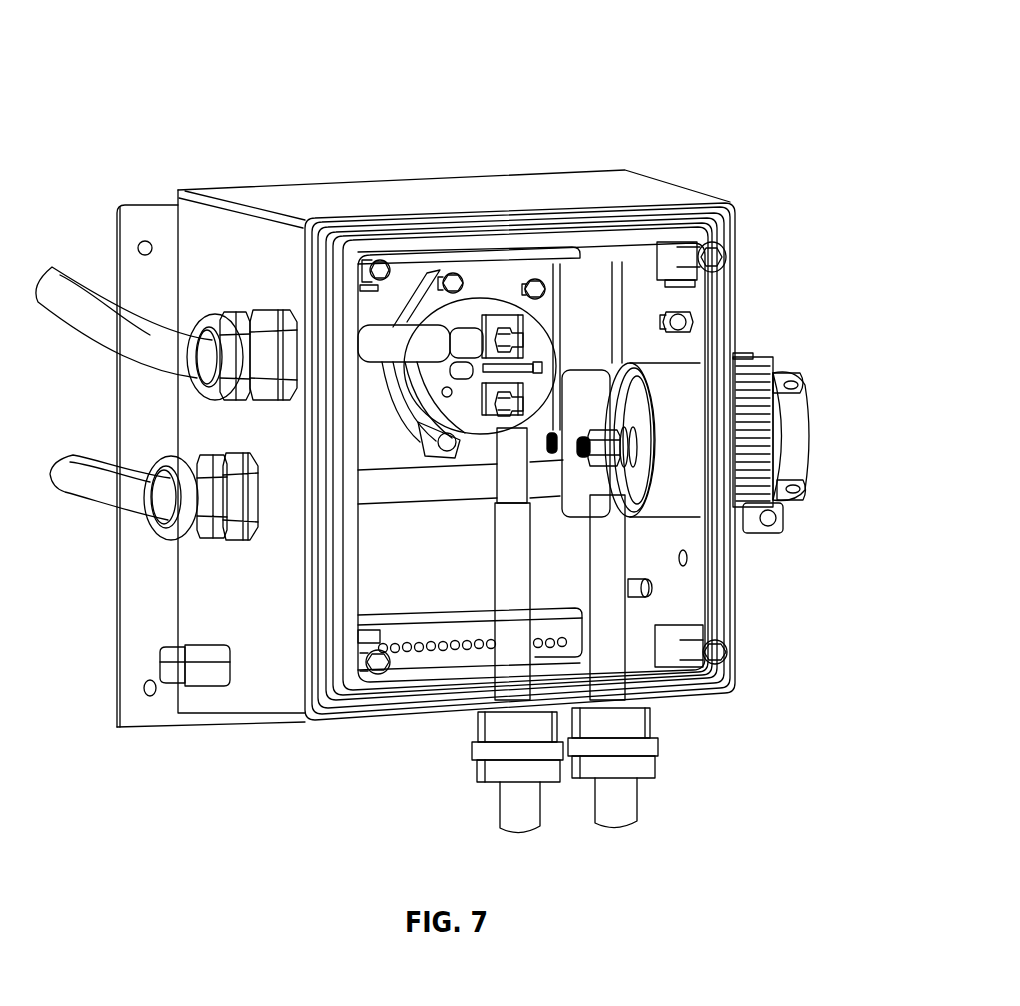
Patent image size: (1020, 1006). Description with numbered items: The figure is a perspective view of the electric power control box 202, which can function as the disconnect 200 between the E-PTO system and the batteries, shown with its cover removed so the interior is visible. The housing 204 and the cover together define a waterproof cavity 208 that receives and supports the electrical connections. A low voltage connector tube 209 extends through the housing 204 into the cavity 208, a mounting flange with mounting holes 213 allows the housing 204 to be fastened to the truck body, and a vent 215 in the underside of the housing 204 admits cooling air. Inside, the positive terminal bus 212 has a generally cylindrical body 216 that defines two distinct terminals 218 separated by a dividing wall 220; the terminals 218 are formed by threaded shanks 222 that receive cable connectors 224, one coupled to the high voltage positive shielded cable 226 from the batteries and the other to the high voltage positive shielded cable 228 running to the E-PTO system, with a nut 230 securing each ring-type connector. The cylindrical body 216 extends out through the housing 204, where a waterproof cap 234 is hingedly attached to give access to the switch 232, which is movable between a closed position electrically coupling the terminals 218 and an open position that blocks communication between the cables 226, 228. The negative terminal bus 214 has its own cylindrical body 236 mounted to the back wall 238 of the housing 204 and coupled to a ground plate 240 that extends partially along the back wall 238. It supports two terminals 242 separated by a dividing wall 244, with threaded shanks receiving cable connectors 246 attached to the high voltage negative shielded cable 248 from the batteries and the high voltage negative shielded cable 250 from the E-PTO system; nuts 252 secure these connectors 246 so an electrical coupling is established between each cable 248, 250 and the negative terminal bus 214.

The disconnect 200 is at (514, 104).
The electric power control box 202 is at (603, 76).
The housing 204 is at (296, 197).
The waterproof cavity 208 is at (668, 586).
The low voltage connector tube 209 is at (165, 652).
The positive terminal bus 212 is at (657, 368).
The mounting holes 213 is at (152, 696).
The negative terminal bus 214 is at (450, 278).
The vent 215 is at (438, 715).
The cylindrical body 216 is at (672, 513).
The terminals 218 is at (707, 394).
The dividing wall 220 is at (620, 305).
The threaded shanks 222 is at (620, 425).
The cable connectors 224 is at (810, 435).
The high voltage positive shielded cable 226 is at (632, 798).
The high voltage positive shielded cable 228 is at (90, 493).
The nut 230 is at (648, 490).
The switch 232 is at (782, 513).
The waterproof cap 234 is at (767, 413).
The cylindrical body 236 is at (400, 300).
The back wall 238 is at (583, 400).
The ground plate 240 is at (530, 290).
The terminals 242 is at (517, 397).
The dividing wall 244 is at (585, 287).
The cable connectors 246 is at (497, 328).
The high voltage negative shielded cable 248 is at (512, 800).
The high voltage negative shielded cable 250 is at (62, 292).
The nuts 252 is at (507, 300).